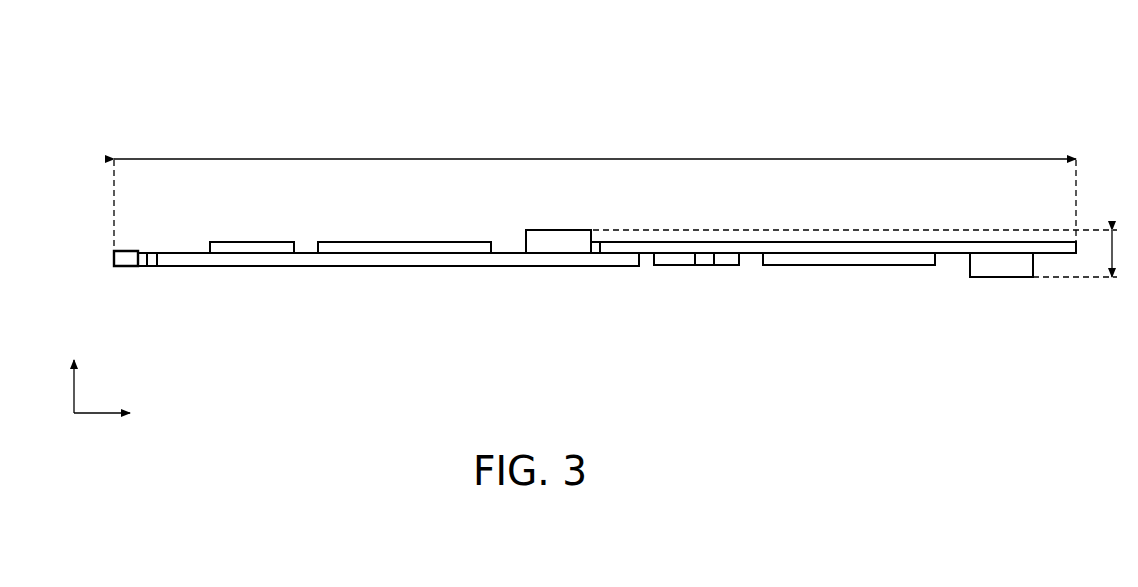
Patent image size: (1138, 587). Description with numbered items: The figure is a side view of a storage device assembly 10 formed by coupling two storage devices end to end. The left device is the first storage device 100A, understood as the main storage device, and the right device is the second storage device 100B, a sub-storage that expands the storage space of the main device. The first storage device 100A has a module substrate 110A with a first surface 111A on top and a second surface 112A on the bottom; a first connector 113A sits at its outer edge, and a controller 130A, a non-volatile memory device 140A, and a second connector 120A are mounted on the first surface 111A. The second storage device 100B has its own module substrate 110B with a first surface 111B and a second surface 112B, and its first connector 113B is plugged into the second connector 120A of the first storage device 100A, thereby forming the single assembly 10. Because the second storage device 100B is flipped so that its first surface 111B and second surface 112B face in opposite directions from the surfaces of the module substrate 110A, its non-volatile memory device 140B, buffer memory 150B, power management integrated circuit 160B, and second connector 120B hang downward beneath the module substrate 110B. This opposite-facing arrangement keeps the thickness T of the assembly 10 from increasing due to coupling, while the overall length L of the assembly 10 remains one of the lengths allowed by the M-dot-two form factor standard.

The storage device assembly 10 is at (547, 52).
The first storage device 100A is at (327, 291).
The module substrate 110A is at (441, 262).
The first surface 111A is at (195, 253).
The second surface 112A is at (197, 268).
The first connector 113A is at (125, 251).
The second connector 120A is at (557, 239).
The controller 130A is at (268, 248).
The non-volatile memory device 140A is at (407, 246).
The second storage device 100B is at (802, 289).
The module substrate 110B is at (950, 249).
The first surface 111B is at (1057, 254).
The second surface 112B is at (1055, 241).
The first connector 113B is at (594, 241).
The second connector 120B is at (1002, 268).
The non-volatile memory device 140B is at (846, 256).
The buffer memory 150B is at (675, 263).
The power management integrated circuit 160B is at (727, 263).